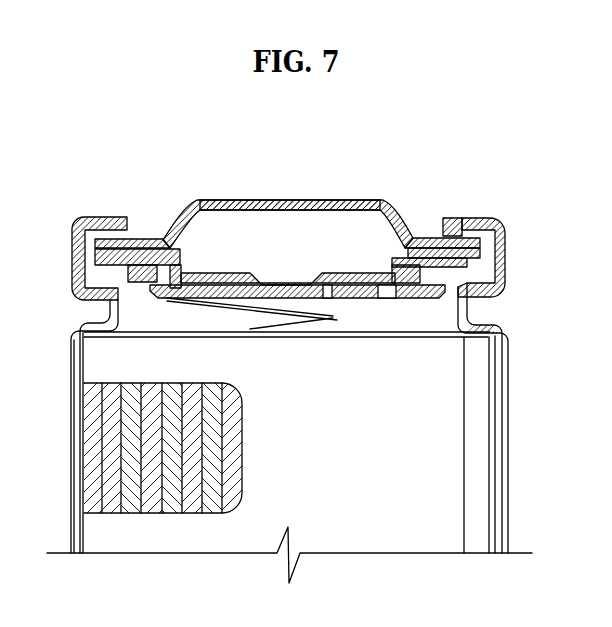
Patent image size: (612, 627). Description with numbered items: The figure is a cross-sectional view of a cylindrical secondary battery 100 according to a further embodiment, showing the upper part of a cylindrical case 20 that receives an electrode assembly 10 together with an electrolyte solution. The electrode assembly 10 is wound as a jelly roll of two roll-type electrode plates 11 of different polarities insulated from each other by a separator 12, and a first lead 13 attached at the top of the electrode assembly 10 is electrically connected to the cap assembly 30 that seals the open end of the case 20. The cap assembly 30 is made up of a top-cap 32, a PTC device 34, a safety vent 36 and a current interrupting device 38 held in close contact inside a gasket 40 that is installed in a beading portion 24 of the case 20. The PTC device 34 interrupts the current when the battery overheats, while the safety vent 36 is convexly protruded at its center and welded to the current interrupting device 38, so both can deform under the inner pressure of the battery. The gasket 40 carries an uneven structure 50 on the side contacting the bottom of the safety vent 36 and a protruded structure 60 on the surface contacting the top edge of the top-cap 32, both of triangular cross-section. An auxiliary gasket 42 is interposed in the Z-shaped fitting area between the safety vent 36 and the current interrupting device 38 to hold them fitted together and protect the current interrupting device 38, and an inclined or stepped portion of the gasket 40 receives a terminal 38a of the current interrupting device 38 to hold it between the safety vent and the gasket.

The secondary battery 100 is at (449, 160).
The electrode assembly 10 is at (84, 406).
The electrode plates 11 is at (130, 463).
The separator 12 is at (110, 431).
The first lead 13 is at (338, 320).
The case 20 is at (514, 268).
The beading portion 24 is at (113, 300).
The cap assembly 30 is at (401, 197).
The top-cap 32 is at (288, 199).
The PTC device 34 is at (160, 250).
The safety vent 36 is at (229, 282).
The current interrupting device 38 is at (387, 293).
The terminal of the current interrupt device 38a is at (100, 267).
The gasket 40 is at (447, 212).
The auxiliary gasket 42 is at (95, 250).
The uneven structure 50 is at (475, 281).
The protruded structure 60 is at (470, 231).